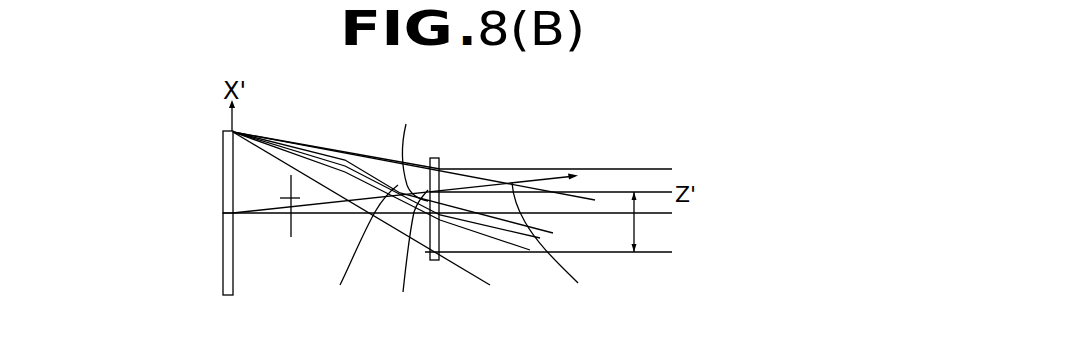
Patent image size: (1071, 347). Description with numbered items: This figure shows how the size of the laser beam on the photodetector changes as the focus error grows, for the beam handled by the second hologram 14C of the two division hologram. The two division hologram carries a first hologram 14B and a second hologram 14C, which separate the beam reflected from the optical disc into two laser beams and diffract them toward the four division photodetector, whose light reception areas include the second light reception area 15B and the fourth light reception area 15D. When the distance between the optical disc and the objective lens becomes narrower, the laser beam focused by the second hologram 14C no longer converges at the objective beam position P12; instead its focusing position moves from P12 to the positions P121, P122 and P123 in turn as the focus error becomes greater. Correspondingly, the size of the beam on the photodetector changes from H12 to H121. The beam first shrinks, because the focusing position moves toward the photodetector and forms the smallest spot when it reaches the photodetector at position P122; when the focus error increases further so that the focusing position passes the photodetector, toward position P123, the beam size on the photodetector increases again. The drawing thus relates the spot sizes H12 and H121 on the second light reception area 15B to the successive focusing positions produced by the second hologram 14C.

The first hologram 14B is at (227, 262).
The second hologram 14C is at (227, 182).
The beam size H12 is at (303, 209).
The objective beam focusing position P12 is at (355, 253).
The focusing position P121 is at (406, 150).
The focusing position P122 is at (405, 256).
The focusing position P123 is at (558, 248).
The second light reception area 15B is at (437, 158).
The fourth light reception area 15D is at (443, 254).
The beam size H121 is at (656, 222).